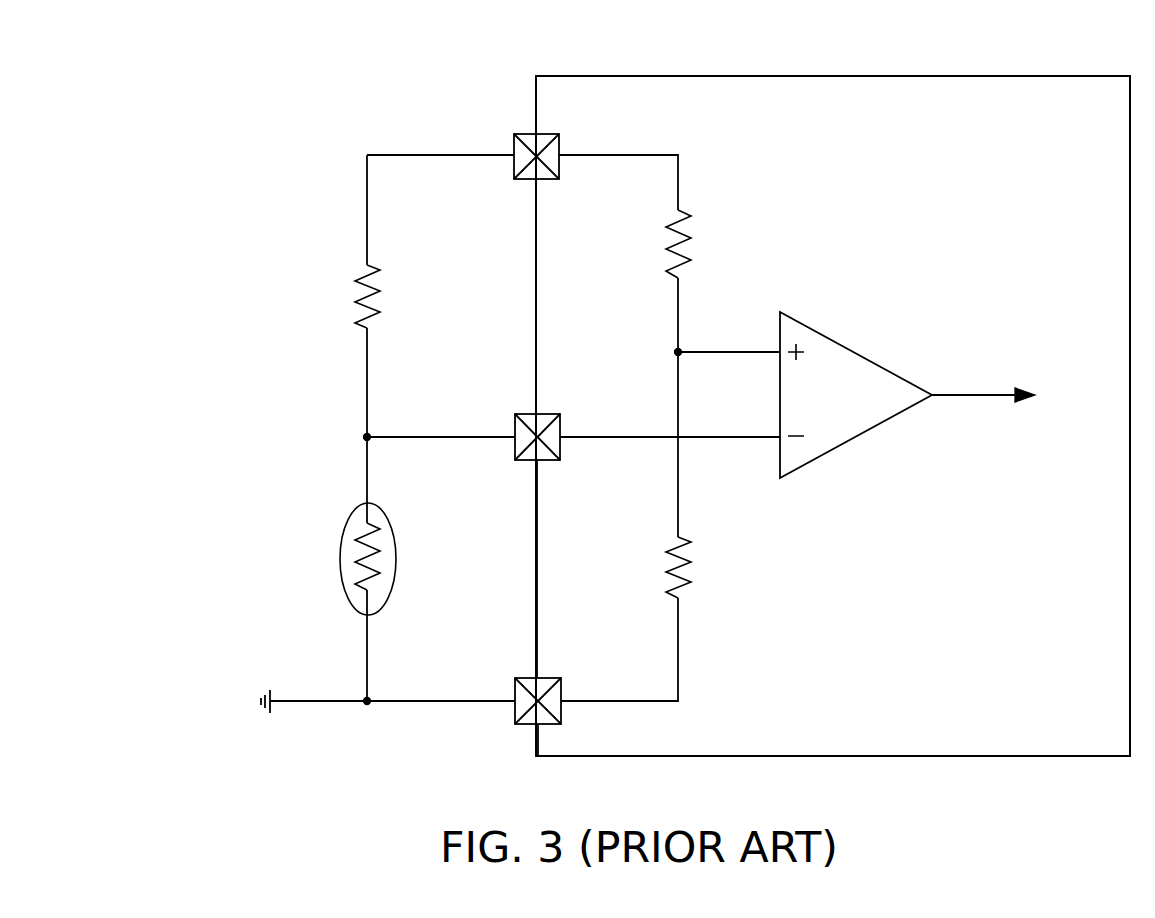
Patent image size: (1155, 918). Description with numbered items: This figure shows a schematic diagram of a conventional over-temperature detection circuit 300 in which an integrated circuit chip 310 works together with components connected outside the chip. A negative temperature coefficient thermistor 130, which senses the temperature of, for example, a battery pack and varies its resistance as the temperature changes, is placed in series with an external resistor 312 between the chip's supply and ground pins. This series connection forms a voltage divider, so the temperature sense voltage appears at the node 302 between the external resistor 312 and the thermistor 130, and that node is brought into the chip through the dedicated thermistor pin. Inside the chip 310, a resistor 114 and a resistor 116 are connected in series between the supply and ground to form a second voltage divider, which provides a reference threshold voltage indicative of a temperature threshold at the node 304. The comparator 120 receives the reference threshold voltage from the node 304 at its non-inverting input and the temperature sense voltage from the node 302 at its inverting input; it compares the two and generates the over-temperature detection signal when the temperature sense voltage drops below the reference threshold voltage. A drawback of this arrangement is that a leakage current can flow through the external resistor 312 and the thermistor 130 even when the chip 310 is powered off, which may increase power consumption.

The over-temperature detection circuit 300 is at (307, 102).
The IC chip 310 is at (575, 75).
The external resistor 312 is at (358, 283).
The node 302 is at (366, 436).
The NTC thermistor 130 is at (350, 517).
The resistor 114 is at (684, 232).
The resistor 116 is at (683, 533).
The node 304 is at (677, 351).
The comparator 120 is at (876, 362).